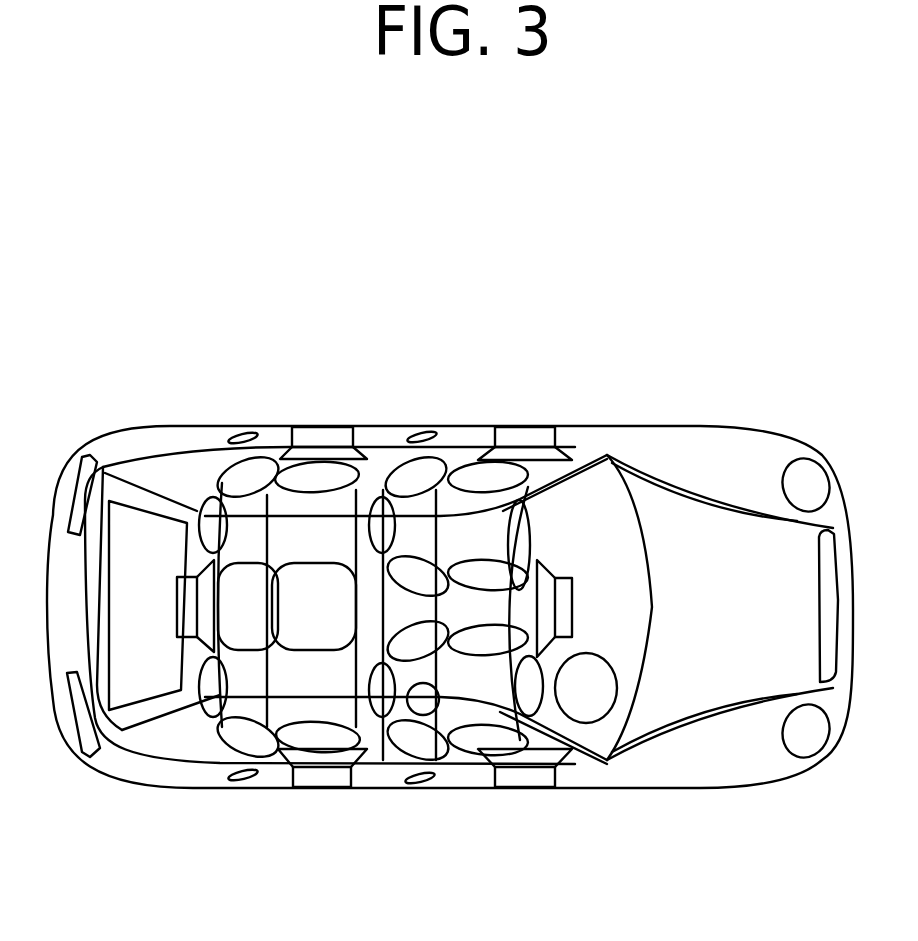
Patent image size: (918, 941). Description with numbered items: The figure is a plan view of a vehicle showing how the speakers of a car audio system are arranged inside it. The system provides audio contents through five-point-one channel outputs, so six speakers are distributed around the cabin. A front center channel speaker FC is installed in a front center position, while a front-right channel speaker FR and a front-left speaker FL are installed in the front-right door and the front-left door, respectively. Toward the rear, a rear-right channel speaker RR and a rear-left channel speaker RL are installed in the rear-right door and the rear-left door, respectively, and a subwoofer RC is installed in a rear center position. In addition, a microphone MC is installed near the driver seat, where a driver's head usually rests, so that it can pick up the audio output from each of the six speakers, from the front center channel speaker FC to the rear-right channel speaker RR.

The rear-left channel speaker RL is at (320, 432).
The front-left speaker FL is at (525, 432).
The rear-right channel speaker RR is at (320, 780).
The front-right channel speaker FR is at (523, 787).
The subwoofer RC is at (186, 610).
The front center channel speaker FC is at (572, 603).
The microphone MC is at (428, 713).